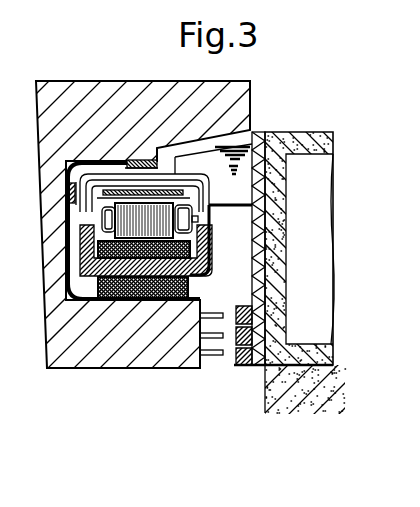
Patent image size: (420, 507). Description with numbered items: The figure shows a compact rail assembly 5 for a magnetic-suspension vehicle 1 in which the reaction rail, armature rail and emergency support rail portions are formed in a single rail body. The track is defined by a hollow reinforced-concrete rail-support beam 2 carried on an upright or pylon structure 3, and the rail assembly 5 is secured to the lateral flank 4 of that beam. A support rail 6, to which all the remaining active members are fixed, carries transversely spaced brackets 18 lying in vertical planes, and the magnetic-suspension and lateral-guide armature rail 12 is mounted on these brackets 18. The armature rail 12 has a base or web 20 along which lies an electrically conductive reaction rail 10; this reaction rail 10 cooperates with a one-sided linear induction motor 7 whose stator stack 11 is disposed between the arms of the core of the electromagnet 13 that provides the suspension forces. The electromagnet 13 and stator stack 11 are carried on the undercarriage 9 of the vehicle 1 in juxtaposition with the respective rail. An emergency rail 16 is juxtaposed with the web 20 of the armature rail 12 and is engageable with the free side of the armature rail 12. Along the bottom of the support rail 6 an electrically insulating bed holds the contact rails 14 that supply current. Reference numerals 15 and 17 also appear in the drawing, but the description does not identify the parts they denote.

The magnetic-suspension vehicle 1 is at (62, 88).
The rail-support beam 2 is at (307, 132).
The upright or pylon structure 3 is at (300, 388).
The lateral flank 4 is at (288, 174).
The rail assembly 5 is at (268, 226).
The support rail 6 is at (262, 268).
The linear induction motor 7 is at (200, 218).
The undercarriage 9 is at (80, 369).
The reaction rail 10 is at (170, 189).
The stator stack 11 is at (132, 245).
The armature rail 12 is at (90, 163).
The electromagnet 13 is at (205, 257).
The contact rail 14 is at (238, 366).
The connecting pins 15 is at (215, 356).
The emergency rail 16 is at (145, 160).
The foil layer 17 is at (128, 164).
The bracket 18 is at (250, 128).
The base or web 20 is at (110, 180).